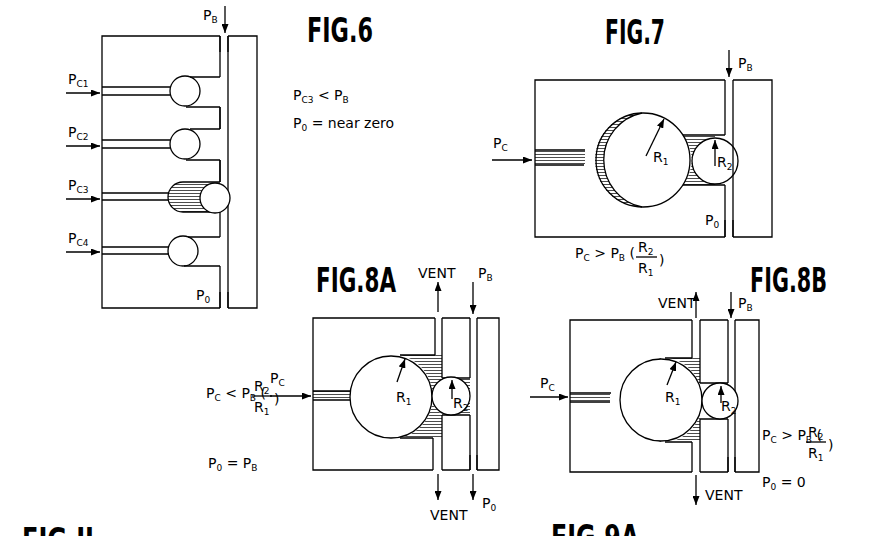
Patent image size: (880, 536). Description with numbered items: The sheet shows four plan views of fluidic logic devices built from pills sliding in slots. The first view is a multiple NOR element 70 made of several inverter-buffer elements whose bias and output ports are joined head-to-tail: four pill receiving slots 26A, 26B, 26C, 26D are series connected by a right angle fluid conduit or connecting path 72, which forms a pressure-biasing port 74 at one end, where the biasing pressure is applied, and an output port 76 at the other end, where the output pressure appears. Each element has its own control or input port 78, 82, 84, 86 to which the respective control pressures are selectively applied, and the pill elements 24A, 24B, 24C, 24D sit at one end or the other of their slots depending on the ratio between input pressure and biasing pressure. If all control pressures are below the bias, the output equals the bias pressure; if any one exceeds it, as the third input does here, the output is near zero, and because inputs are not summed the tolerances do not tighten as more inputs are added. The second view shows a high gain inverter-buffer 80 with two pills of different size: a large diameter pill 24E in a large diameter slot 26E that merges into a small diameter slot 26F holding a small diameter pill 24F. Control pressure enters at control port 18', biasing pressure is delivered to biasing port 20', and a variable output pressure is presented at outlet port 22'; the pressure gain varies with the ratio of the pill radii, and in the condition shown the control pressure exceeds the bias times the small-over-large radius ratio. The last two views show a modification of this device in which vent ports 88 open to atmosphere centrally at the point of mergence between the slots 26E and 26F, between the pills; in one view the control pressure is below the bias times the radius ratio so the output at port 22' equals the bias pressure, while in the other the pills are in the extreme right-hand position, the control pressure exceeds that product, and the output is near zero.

In FIG. 6, the multi-stage valve body 70 is at (259, 199).
In FIG. 6, the connecting path 72 is at (223, 120).
In FIG. 6, the pressure-biasing port 74 is at (228, 43).
In FIG. 6, the output port 76 is at (222, 310).
In FIG. 6, the control port 78 is at (149, 89).
In FIG. 6, the control port 82 is at (147, 142).
In FIG. 6, the control port 84 is at (128, 196).
In FIG. 6, the control port 86 is at (128, 249).
In FIG. 6, the pill element 24A is at (188, 88).
In FIG. 6, the pill element 24B is at (184, 143).
In FIG. 6, the pill element 24C is at (216, 200).
In FIG. 6, the pill element 24D is at (182, 247).
In FIG. 6, the pill receiving slot 26A is at (217, 92).
In FIG. 6, the pill receiving slot 26B is at (213, 148).
In FIG. 6, the pill receiving slot 26C is at (183, 195).
In FIG. 6, the pill receiving slot 26D is at (213, 253).
In FIG. 7, the high gain inverter-buffer 80 is at (774, 163).
In FIG. 7, the control port 18' is at (560, 174).
In FIG. 8A, the control port 18' is at (332, 382).
In FIG. 8B, the control port 18' is at (590, 384).
In FIG. 7, the biasing port 20' is at (762, 158).
In FIG. 8A, the biasing port 20' is at (499, 394).
In FIG. 8B, the biasing port 20' is at (759, 396).
In FIG. 7, the outlet port 22' is at (726, 240).
In FIG. 8A, the outlet port 22' is at (499, 459).
In FIG. 8B, the outlet port 22' is at (744, 457).
In FIG. 7, the large diameter pill 24E is at (648, 190).
In FIG. 8A, the large diameter pill 24E is at (370, 413).
In FIG. 8B, the large diameter pill 24E is at (634, 416).
In FIG. 7, the small diameter pill 24F is at (719, 178).
In FIG. 8A, the small diameter pill 24F is at (449, 415).
In FIG. 8B, the small diameter pill 24F is at (739, 401).
In FIG. 7, the large diameter slot 26E is at (598, 130).
In FIG. 8A, the large diameter slot 26E is at (427, 432).
In FIG. 7, the small diameter slot 26F is at (694, 135).
In FIG. 8A, the small diameter slot 26F is at (475, 392).
In FIG. 8A, the vent ports 88 is at (433, 338).